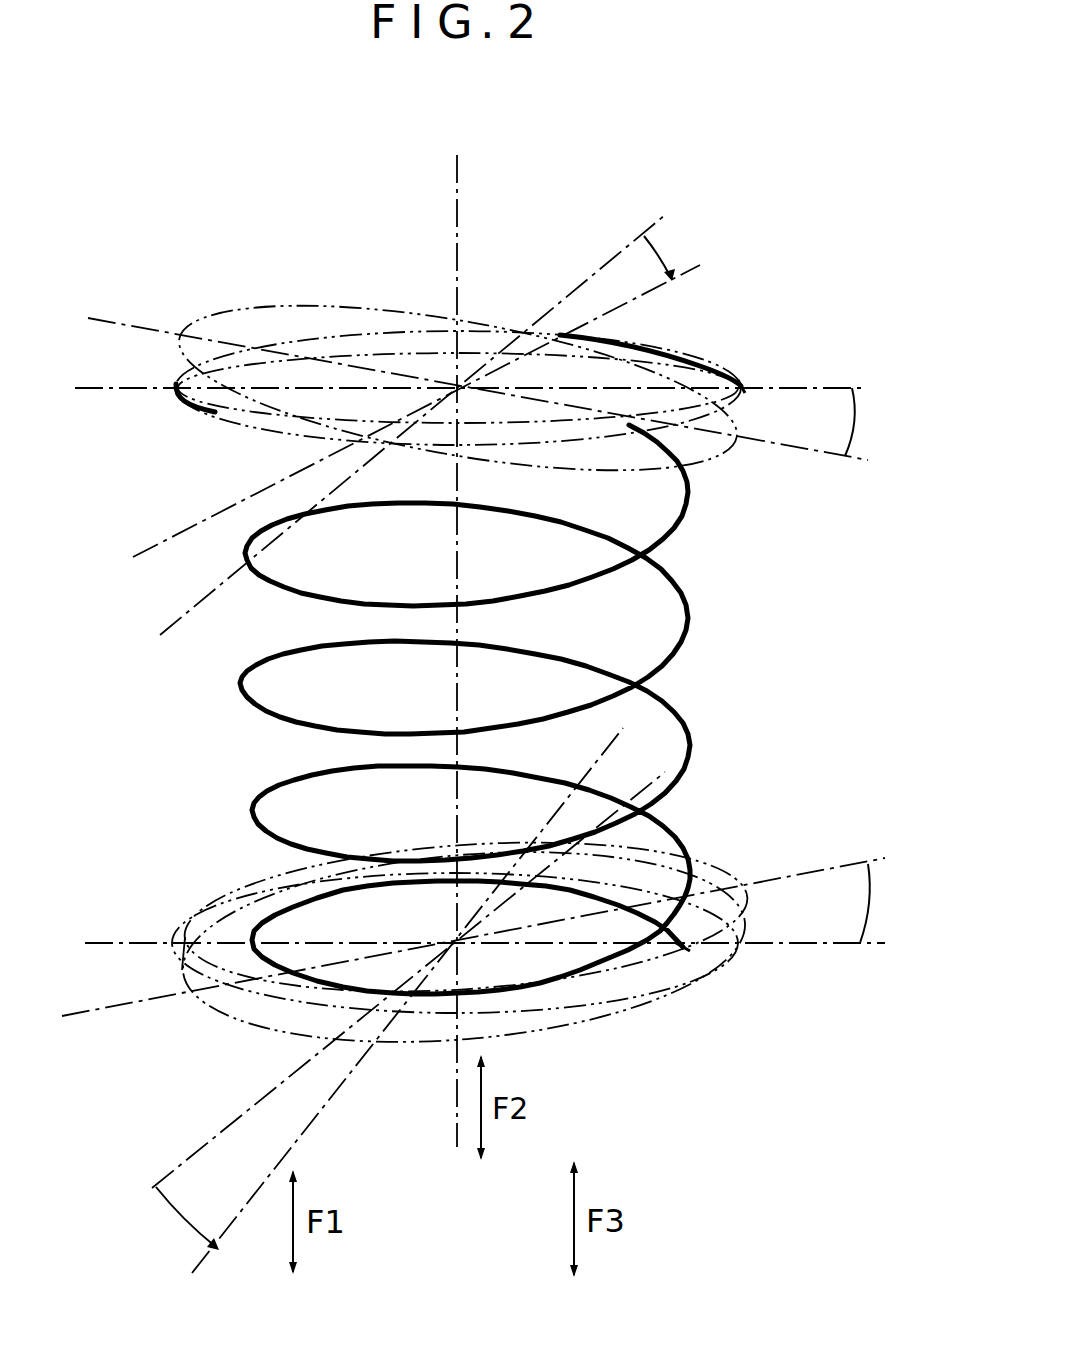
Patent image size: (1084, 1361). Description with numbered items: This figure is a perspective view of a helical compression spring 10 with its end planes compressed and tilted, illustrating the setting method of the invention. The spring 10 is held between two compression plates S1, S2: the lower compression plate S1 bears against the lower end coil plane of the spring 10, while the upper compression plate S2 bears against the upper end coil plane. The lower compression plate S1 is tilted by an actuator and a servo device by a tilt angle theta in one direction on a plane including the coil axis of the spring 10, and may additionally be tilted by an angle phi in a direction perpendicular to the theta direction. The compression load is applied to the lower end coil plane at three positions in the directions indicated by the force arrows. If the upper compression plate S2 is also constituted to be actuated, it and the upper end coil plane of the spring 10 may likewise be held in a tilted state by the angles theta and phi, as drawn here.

The helical compression spring 10 is at (697, 588).
The compression plate S1 is at (733, 963).
The compression plate S2 is at (700, 353).